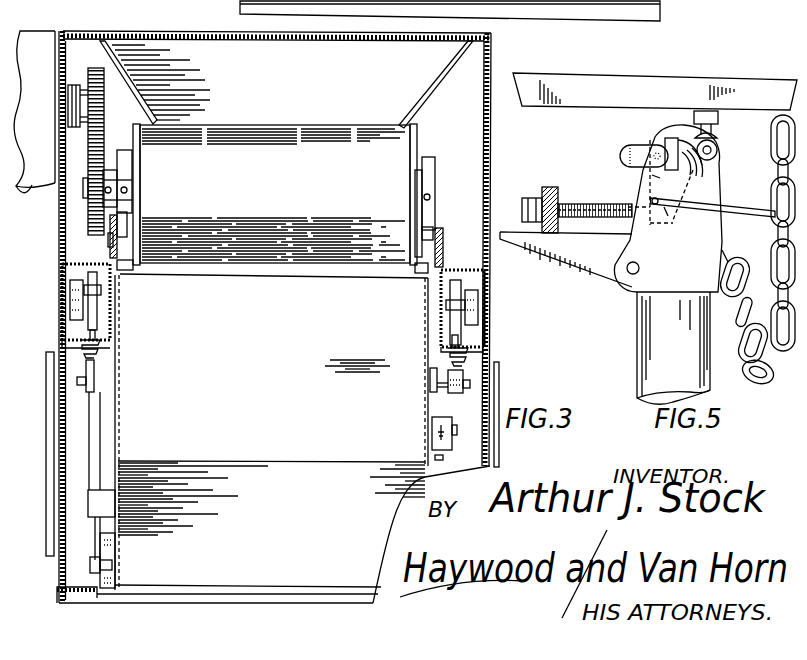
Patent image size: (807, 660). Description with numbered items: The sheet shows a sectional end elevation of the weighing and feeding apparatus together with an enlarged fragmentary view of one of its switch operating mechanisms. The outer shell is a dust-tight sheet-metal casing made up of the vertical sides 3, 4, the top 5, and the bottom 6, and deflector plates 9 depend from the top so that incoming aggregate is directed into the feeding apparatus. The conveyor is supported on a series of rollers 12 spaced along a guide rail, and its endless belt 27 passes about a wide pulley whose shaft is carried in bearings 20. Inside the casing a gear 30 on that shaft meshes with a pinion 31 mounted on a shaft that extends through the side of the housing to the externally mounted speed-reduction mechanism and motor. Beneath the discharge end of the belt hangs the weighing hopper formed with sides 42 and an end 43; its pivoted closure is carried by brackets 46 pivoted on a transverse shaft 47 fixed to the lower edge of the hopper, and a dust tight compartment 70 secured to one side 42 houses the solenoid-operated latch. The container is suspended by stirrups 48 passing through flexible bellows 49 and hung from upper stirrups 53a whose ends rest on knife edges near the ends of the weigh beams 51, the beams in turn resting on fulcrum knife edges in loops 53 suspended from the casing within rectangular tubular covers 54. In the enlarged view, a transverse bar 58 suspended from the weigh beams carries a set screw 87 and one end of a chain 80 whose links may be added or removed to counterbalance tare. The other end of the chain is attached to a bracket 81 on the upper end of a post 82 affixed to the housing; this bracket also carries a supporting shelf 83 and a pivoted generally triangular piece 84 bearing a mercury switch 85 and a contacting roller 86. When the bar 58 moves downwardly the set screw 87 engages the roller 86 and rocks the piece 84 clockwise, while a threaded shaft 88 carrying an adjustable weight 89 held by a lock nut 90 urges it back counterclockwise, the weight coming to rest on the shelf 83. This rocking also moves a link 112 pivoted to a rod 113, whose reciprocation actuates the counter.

In FIG. 3, the vertical side 3 is at (59, 221).
In FIG. 3, the vertical side 4 is at (486, 167).
In FIG. 3, the top 5 is at (90, 33).
In FIG. 3, the bottom 6 is at (570, 21).
In FIG. 3, the deflector plates 9 is at (135, 98).
In FIG. 3, the rollers 12 is at (128, 245).
In FIG. 3, the bearings 20 is at (120, 178).
In FIG. 3, the endless belt 27 is at (268, 125).
In FIG. 3, the gear 30 is at (90, 155).
In FIG. 3, the pinion 31 is at (97, 68).
In FIG. 3, the sides 42 is at (430, 469).
In FIG. 3, the end 43 is at (433, 395).
In FIG. 3, the brackets 46 is at (112, 563).
In FIG. 3, the transverse shaft 47 is at (88, 565).
In FIG. 3, the loops or stirrups 48 is at (92, 334).
In FIG. 3, the flexible bellows 49 is at (100, 350).
In FIG. 3, the weigh beams 51 is at (72, 290).
In FIG. 3, the loops 53 is at (64, 272).
In FIG. 3, the loops or stirrups 53a is at (96, 315).
In FIG. 3, the tubular covers 54 is at (75, 346).
In FIG. 3, the dust tight compartment 70 is at (90, 498).
In FIG. 5, the transverse bar 58 is at (750, 86).
In FIG. 5, the chain 80 is at (772, 224).
In FIG. 5, the bracket 81 is at (705, 203).
In FIG. 5, the post 82 is at (637, 330).
In FIG. 5, the supporting shelf 83 is at (606, 272).
In FIG. 5, the pivoted generally triangular piece 84 is at (712, 166).
In FIG. 5, the mercury switch 85 is at (630, 150).
In FIG. 5, the contacting roller 86 is at (719, 150).
In FIG. 5, the set screw 87 is at (718, 129).
In FIG. 5, the threaded shaft 88 is at (591, 203).
In FIG. 5, the adjustable weight 89 is at (548, 200).
In FIG. 5, the lock nut 90 is at (545, 190).
In FIG. 5, the link 112 is at (662, 178).
In FIG. 5, the rod 113 is at (671, 214).